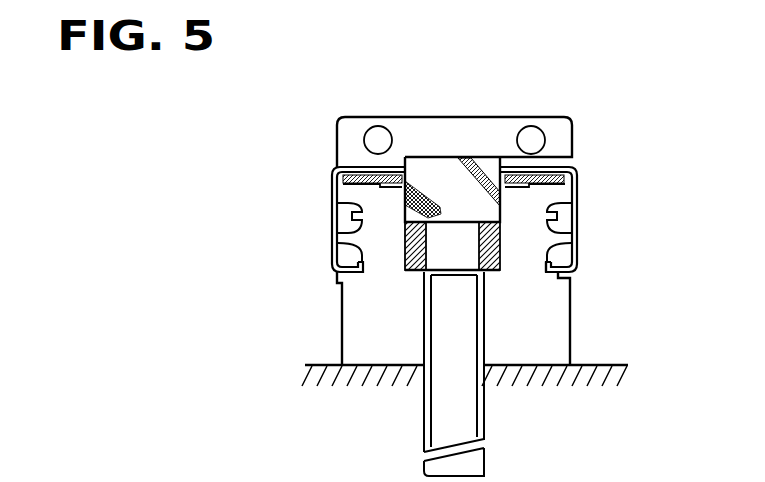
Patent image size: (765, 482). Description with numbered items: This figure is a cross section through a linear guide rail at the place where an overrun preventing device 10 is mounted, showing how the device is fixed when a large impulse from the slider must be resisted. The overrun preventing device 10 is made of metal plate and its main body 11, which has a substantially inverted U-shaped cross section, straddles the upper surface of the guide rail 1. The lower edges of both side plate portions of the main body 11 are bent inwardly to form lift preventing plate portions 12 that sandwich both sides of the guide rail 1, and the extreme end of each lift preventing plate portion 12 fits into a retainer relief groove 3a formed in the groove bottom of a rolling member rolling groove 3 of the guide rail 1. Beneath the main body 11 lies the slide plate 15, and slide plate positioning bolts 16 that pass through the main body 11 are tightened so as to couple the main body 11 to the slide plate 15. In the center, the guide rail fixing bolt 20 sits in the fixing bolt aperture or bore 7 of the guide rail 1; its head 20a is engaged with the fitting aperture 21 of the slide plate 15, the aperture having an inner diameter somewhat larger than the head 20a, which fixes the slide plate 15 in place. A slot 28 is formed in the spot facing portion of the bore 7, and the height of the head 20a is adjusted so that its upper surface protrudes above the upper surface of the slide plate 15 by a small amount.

The guide rail 1 is at (555, 338).
The rolling member rolling groove 3 is at (573, 278).
The retainer relief groove 3a is at (548, 272).
The fixing bolt aperture 7 is at (405, 271).
The overrun preventing device 10 is at (559, 100).
The main body 11 is at (573, 180).
The lift preventing plate portion 12 is at (337, 277).
The slide plate 15 is at (336, 181).
The positioning bolt 16 is at (517, 147).
The guide rail fixing bolt 20 is at (422, 164).
The head 20a is at (443, 157).
The fitting aperture 21 is at (482, 160).
The slot 28 is at (402, 218).